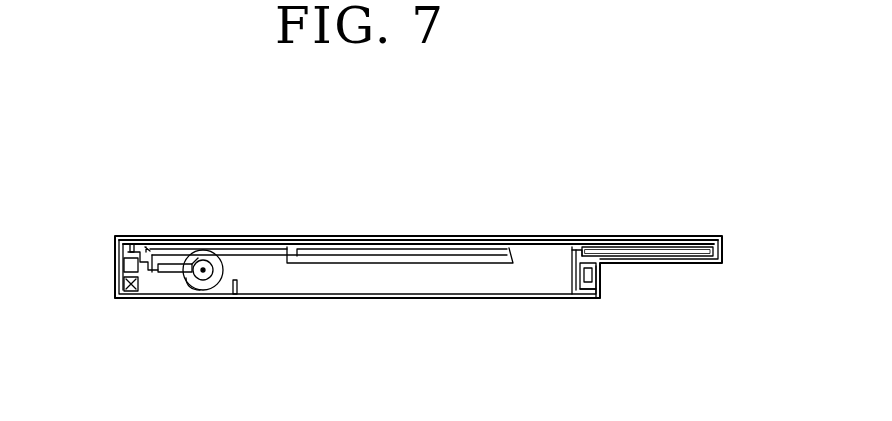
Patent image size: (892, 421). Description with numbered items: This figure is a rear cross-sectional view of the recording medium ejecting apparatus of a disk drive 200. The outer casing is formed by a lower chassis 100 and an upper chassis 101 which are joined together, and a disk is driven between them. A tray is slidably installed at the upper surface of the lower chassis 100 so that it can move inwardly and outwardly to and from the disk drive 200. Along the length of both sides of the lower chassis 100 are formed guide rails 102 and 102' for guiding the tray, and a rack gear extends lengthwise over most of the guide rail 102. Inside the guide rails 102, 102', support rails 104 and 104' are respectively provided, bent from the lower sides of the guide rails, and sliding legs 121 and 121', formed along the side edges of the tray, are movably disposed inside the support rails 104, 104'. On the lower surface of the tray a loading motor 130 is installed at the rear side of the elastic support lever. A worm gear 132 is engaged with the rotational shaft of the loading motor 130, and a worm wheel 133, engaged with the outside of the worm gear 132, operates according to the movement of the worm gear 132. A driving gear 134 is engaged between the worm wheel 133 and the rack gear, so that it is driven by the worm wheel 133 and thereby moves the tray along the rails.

The lower chassis 100 is at (320, 298).
The upper chassis 101 is at (278, 236).
The guide rail 102 is at (92, 289).
The support rail 104 is at (108, 252).
The sliding leg 121 is at (125, 328).
The loading motor 130 is at (220, 287).
The worm gear 132 is at (190, 285).
The worm wheel 133 is at (162, 273).
The driving gear 134 is at (172, 258).
The support rail 104' is at (627, 272).
The guide rail 102' is at (631, 302).
The sliding leg 121' is at (594, 322).
The disk drive 200 is at (672, 213).